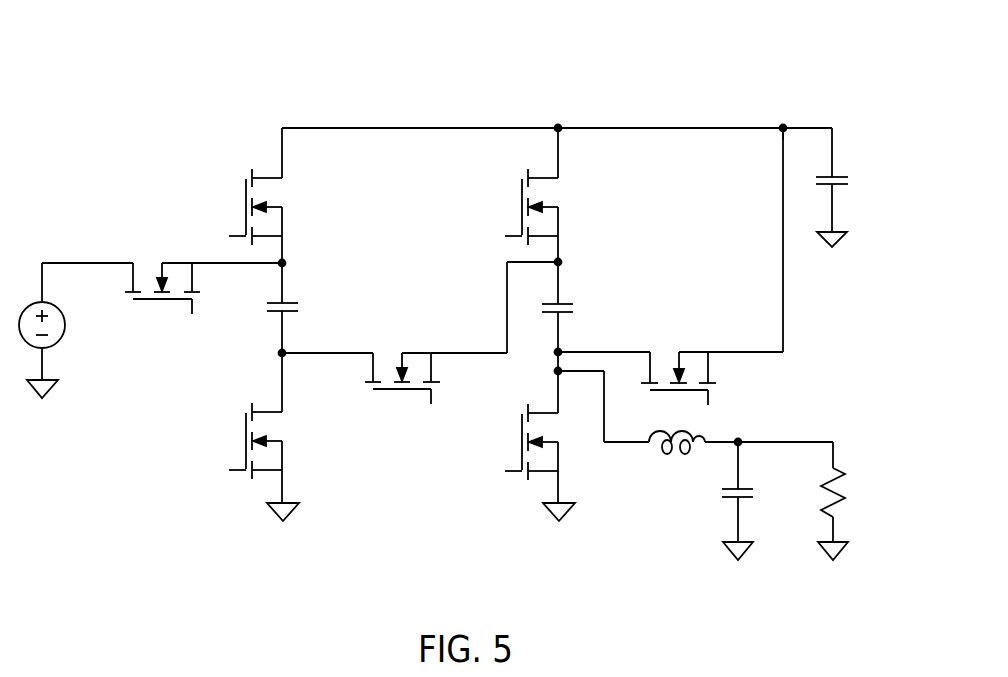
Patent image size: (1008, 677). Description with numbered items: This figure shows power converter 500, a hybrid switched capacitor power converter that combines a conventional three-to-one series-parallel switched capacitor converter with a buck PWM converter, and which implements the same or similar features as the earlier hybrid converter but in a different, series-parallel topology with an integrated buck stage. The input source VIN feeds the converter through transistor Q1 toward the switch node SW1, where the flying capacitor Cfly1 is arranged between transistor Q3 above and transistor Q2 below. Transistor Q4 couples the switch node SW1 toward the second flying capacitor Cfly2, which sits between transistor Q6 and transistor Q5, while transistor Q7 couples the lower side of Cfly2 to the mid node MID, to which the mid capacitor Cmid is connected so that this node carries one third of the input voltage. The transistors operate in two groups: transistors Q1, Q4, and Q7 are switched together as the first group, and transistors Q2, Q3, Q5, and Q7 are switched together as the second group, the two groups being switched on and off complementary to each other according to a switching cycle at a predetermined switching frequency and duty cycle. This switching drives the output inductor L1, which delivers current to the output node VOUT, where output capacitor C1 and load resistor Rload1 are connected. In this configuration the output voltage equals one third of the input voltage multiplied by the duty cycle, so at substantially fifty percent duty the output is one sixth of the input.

The power converter 500 is at (108, 78).
The transistor Q1 is at (203, 272).
The transistor Q2 is at (271, 437).
The transistor Q3 is at (272, 195).
The transistor Q4 is at (461, 333).
The transistor Q5 is at (547, 446).
The transistor Q6 is at (547, 195).
The transistor Q7 is at (670, 266).
The flying capacitor Cfly1 is at (298, 308).
The flying capacitor Cfly2 is at (574, 316).
The mid capacitor Cmid is at (849, 187).
The output capacitor C1 is at (763, 501).
The output inductor L1 is at (695, 427).
The load resistor Rload1 is at (861, 501).
The input voltage source VIN is at (76, 330).
The switch node SW1 is at (326, 340).
The mid node MID is at (783, 116).
The output node VOUT is at (797, 426).